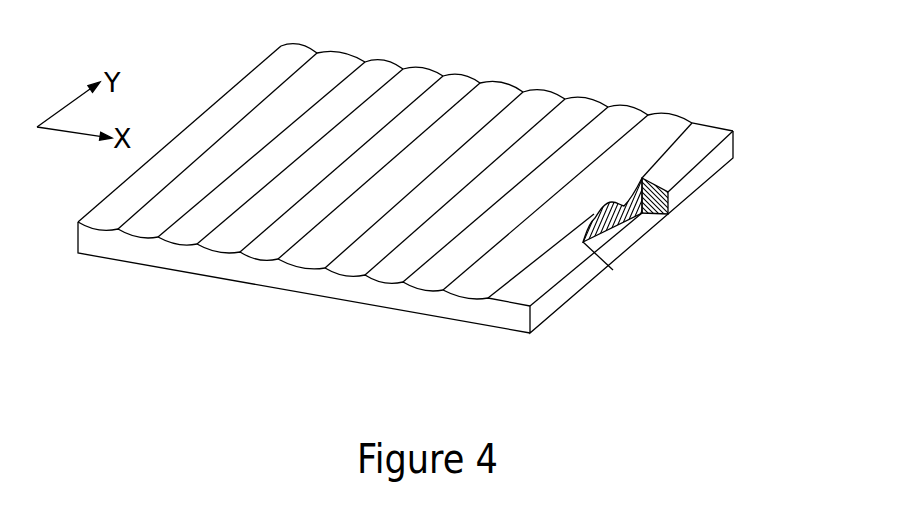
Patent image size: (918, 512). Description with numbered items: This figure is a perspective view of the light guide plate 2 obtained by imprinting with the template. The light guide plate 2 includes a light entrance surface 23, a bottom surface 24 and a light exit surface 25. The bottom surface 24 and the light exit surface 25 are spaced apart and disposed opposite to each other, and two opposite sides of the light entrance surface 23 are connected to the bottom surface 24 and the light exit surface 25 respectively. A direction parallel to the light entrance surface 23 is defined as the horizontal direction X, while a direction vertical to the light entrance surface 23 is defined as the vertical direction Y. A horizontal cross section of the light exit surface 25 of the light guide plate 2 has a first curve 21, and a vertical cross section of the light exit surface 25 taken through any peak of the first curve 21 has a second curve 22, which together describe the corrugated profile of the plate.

The light guide plate 2 is at (693, 182).
The first curve 21 is at (345, 268).
The second curve 22 is at (642, 215).
The light entrance surface 23 is at (448, 303).
The bottom surface 24 is at (658, 218).
The light exit surface 25 is at (708, 127).